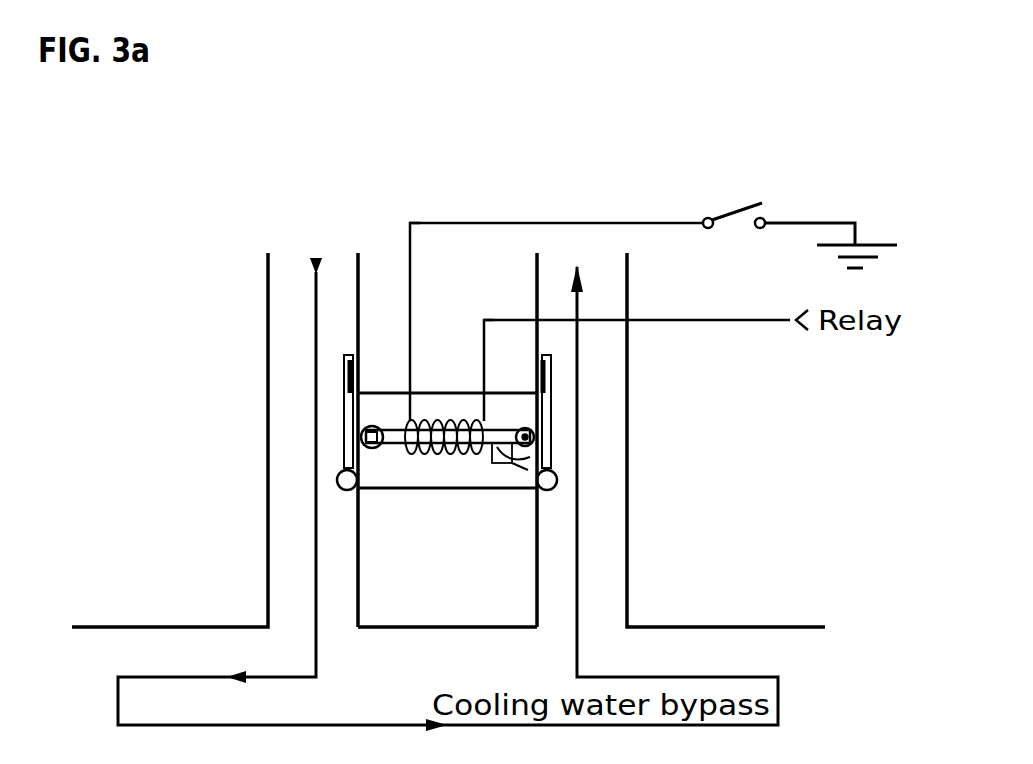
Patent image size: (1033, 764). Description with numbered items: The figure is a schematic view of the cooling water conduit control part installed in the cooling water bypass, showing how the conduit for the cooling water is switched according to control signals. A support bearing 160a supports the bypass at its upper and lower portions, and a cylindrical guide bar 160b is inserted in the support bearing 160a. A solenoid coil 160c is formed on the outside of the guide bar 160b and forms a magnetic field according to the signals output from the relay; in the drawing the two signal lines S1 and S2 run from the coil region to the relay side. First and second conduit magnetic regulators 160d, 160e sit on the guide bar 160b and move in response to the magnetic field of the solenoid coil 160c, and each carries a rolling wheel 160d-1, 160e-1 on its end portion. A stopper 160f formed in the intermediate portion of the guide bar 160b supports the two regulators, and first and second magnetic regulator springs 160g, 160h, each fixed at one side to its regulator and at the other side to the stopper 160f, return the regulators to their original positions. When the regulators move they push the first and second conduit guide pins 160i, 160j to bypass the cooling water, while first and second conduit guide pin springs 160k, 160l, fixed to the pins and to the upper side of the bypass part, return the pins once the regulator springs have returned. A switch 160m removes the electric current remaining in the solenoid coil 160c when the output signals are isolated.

The support bearing 160a is at (522, 474).
The cylindrical guide bar 160b is at (392, 424).
The solenoid coil 160c is at (435, 455).
The first conduit magnetic regulator 160d is at (396, 445).
The rolling wheel 160d-1 is at (361, 437).
The second conduit magnetic regulator 160e is at (553, 470).
The rolling wheel 160e-1 is at (537, 437).
The stopper 160f is at (444, 421).
The first magnetic regulator spring 160g is at (477, 450).
The second magnetic regulator spring 160h is at (532, 484).
The first conduit guide pin 160i is at (344, 396).
The second conduit guide pin 160j is at (549, 387).
The first conduit guide pin spring 160k is at (362, 368).
The second conduit guide pin spring 160l is at (528, 364).
The switch 160m is at (733, 204).
The switch signal S1 is at (422, 208).
The switch signal S2 is at (501, 305).